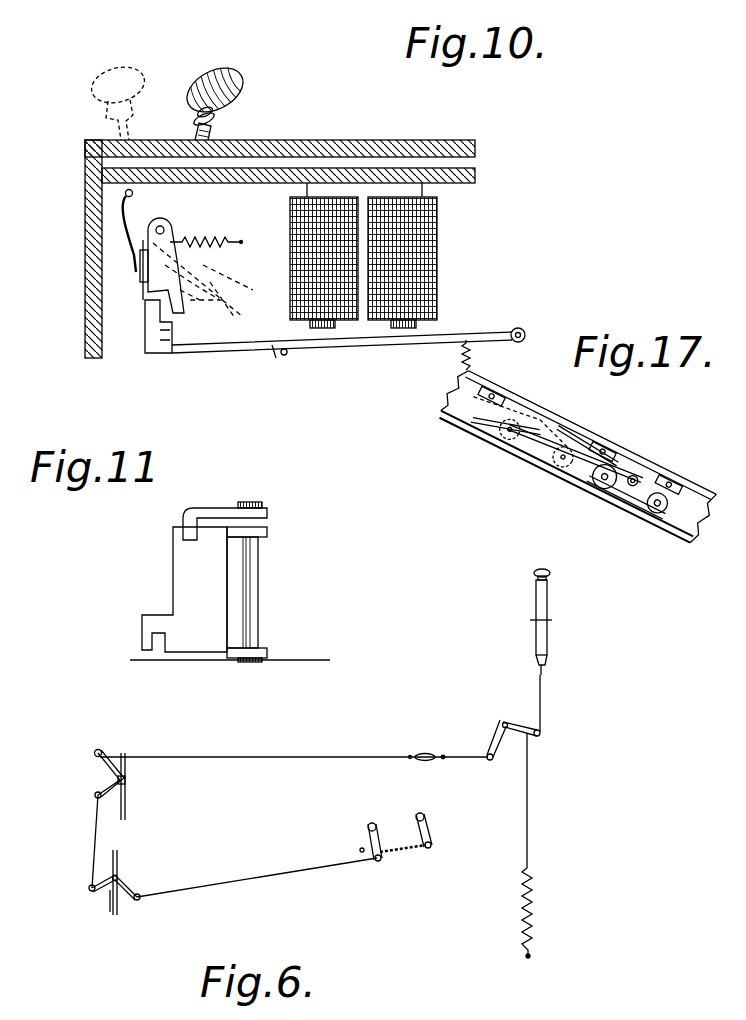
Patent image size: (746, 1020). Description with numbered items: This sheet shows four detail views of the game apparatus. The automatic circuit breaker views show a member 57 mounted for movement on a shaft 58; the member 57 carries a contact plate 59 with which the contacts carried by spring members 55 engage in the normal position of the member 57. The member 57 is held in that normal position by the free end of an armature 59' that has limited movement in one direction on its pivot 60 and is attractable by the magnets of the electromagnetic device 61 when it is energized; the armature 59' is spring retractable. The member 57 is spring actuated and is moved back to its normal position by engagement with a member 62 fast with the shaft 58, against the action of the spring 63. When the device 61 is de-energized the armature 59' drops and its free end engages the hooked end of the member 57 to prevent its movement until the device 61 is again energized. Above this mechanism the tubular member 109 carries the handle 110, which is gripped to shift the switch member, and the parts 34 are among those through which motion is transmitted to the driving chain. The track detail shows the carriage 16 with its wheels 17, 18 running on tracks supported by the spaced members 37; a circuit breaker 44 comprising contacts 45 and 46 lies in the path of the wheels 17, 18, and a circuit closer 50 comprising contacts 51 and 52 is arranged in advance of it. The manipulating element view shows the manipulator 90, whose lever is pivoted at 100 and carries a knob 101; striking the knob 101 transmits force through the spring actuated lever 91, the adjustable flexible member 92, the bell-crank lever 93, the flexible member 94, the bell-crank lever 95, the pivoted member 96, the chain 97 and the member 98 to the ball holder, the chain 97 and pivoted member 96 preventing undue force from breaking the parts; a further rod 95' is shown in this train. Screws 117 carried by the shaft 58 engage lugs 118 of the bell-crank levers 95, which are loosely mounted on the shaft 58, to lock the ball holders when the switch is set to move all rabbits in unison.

In FIG. 10, the handle 110 is at (237, 78).
In FIG. 10, the tubular member 109 is at (216, 138).
In FIG. 10, the driving part 34 is at (140, 276).
In FIG. 10, the spring member 55 is at (131, 216).
In FIG. 10, the contact plate 59 is at (129, 273).
In FIG. 10, the shaft 58 is at (170, 224).
In FIG. 11, the shaft 58 is at (262, 592).
In FIG. 6, the shaft 58 is at (118, 858).
In FIG. 10, the spring 63 is at (222, 240).
In FIG. 10, the member 62 is at (200, 263).
In FIG. 11, the member 62 is at (233, 507).
In FIG. 10, the member 57 is at (150, 312).
In FIG. 11, the member 57 is at (182, 576).
In FIG. 10, the electromagnetic device 61 is at (440, 268).
In FIG. 10, the pivot 60 is at (528, 330).
In FIG. 10, the armature 59' is at (342, 351).
In FIG. 17, the contact 45 is at (577, 456).
In FIG. 17, the circuit breaker 44 is at (580, 440).
In FIG. 17, the contact 46 is at (587, 446).
In FIG. 17, the circuit closer 50 is at (575, 453).
In FIG. 17, the contact 51 is at (507, 427).
In FIG. 17, the contact 52 is at (522, 430).
In FIG. 17, the wheel 17 is at (605, 477).
In FIG. 17, the wheel 18 is at (657, 503).
In FIG. 17, the carriage 16 is at (632, 480).
In FIG. 17, the member 37 is at (657, 515).
In FIG. 6, the manipulator 90 is at (524, 600).
In FIG. 6, the knob 101 is at (551, 572).
In FIG. 6, the pivot 100 is at (552, 620).
In FIG. 6, the spring actuated lever 91 is at (508, 718).
In FIG. 6, the adjustable flexible member 92 is at (292, 756).
In FIG. 6, the bell-crank lever 93 is at (95, 757).
In FIG. 6, the flexible member 94 is at (90, 838).
In FIG. 6, the bell-crank lever 95 is at (93, 895).
In FIG. 6, the screw 117 is at (138, 901).
In FIG. 6, the lug 118 is at (108, 905).
In FIG. 6, the rod 95' is at (257, 877).
In FIG. 6, the pivoted member 96 is at (366, 836).
In FIG. 6, the member 98 is at (445, 830).
In FIG. 6, the chain 97 is at (412, 852).